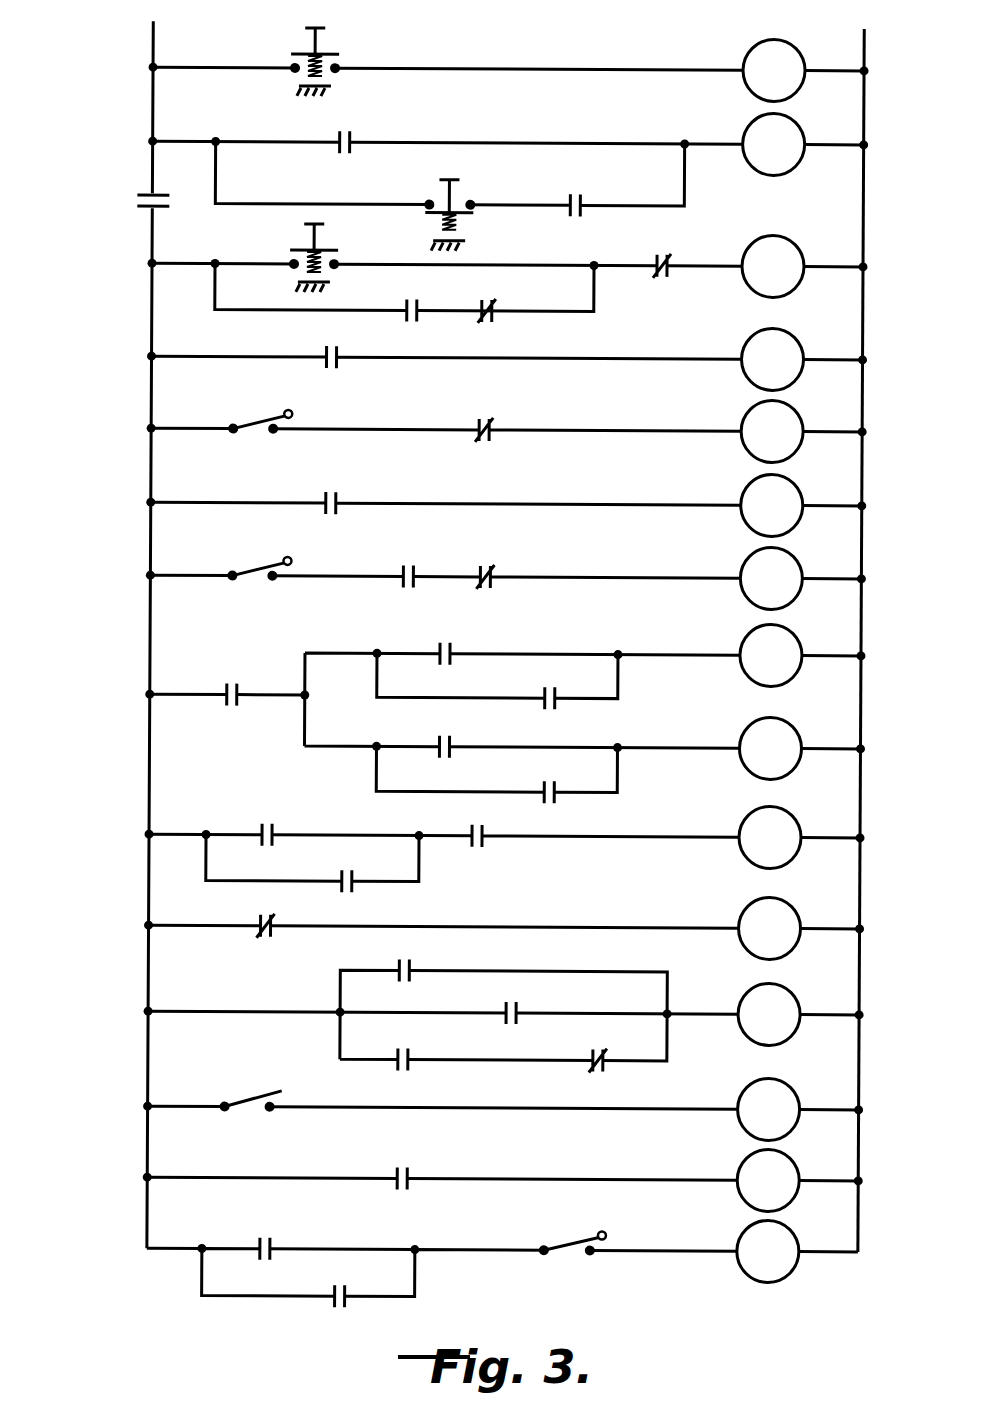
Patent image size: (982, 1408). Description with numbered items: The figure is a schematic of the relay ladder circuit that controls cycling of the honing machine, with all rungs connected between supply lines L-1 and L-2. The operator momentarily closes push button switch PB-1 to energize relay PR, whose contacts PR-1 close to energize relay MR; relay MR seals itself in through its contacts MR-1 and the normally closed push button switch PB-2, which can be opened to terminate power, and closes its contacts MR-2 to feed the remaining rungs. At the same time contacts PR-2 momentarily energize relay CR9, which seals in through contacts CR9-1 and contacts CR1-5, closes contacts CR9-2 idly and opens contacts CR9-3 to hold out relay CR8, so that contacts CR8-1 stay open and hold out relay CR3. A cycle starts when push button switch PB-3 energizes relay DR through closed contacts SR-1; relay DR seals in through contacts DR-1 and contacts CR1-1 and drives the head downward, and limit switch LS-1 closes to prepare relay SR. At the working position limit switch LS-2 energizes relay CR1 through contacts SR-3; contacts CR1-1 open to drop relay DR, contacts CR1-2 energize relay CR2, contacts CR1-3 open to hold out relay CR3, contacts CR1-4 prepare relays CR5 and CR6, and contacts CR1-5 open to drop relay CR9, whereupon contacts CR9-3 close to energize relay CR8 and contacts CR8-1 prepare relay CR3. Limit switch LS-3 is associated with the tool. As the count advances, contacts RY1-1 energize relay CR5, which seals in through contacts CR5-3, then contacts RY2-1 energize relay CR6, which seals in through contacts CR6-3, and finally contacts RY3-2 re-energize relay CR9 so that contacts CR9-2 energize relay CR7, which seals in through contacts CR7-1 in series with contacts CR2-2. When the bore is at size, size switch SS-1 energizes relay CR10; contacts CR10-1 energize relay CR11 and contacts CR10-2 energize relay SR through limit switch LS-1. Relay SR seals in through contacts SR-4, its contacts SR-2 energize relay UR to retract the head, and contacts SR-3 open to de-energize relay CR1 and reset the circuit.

The line L-1 is at (148, 624).
The line L-2 is at (855, 629).
The push button switch PB-1 is at (343, 61).
The relay PR is at (774, 70).
The relay contacts PR-1 is at (379, 131).
The normally closed push button switch PB-2 is at (418, 211).
The relay contacts MR-1 is at (584, 193).
The relay MR is at (773, 144).
The relay contacts MR-2 is at (124, 188).
The push button switch PB-3 is at (285, 258).
The relay contacts SR-1 is at (660, 255).
The relay contacts DR-1 is at (397, 298).
The relay contacts CR1-1 is at (497, 299).
The relay DR is at (773, 266).
The relay contacts SR-2 is at (320, 344).
The relay UR is at (772, 359).
The limit switch LS-2 is at (242, 414).
The relay contacts SR-3 is at (485, 417).
The relay CR1 is at (772, 431).
The relay contacts CR1-2 is at (327, 490).
The relay CR2 is at (772, 505).
The limit switch LS-3 is at (241, 561).
The relay contacts CR8-1 is at (398, 564).
The relay contacts CR1-3 is at (503, 566).
The relay CR3 is at (771, 578).
The relay contacts CR1-4 is at (221, 679).
The relay contacts RY1-1 is at (440, 639).
The relay contacts CR5-3 is at (531, 687).
The relay CR5 is at (771, 655).
The relay contacts RY2-1 is at (426, 733).
The relay contacts CR6-3 is at (540, 781).
The relay CR6 is at (770, 748).
The relay contacts CR9-2 is at (262, 821).
The relay contacts CR2-2 is at (464, 824).
The relay contacts CR7-1 is at (352, 869).
The relay CR7 is at (770, 837).
The relay contacts CR9-3 is at (253, 912).
The relay CR8 is at (769, 928).
The relay contacts PR-2 is at (396, 956).
The relay contacts RY3-2 is at (497, 1002).
The relay contacts CR9-1 is at (391, 1045).
The relay contacts CR1-5 is at (591, 1050).
The relay CR9 is at (769, 1014).
The size switch SS-1 is at (242, 1090).
The relay CR10 is at (768, 1109).
The relay contacts CR10-1 is at (400, 1163).
The relay CR11 is at (768, 1180).
The relay contacts CR10-2 is at (264, 1235).
The relay contacts SR-4 is at (336, 1282).
The limit switch LS-1 is at (559, 1234).
The relay SR is at (768, 1251).